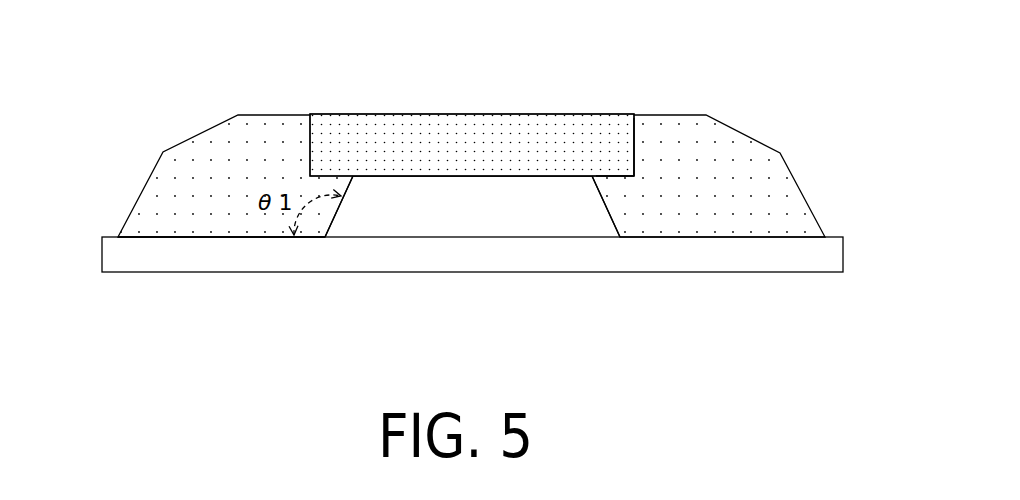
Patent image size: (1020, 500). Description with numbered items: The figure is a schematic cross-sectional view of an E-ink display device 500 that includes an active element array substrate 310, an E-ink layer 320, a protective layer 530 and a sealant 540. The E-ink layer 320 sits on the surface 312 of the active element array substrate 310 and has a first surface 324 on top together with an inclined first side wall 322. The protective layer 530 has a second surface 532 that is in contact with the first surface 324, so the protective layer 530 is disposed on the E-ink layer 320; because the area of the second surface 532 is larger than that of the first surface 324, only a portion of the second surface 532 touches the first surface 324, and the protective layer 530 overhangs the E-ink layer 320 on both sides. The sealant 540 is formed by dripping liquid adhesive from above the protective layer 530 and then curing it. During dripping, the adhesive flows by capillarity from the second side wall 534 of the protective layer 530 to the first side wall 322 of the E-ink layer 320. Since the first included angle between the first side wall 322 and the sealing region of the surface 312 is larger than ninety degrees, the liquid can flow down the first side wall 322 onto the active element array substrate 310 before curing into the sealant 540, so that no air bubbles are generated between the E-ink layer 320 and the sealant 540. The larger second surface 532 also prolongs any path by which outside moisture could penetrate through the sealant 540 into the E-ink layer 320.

The active element array substrate 310 is at (820, 255).
The surface 312 is at (155, 235).
The E-ink layer 320 is at (498, 208).
The first side wall 322 is at (613, 219).
The first surface 324 is at (391, 178).
The E-ink display device 500 is at (924, 373).
The protective layer 530 is at (474, 128).
The second surface 532 is at (618, 173).
The second side wall 534 is at (637, 143).
The sealant 540 is at (793, 175).